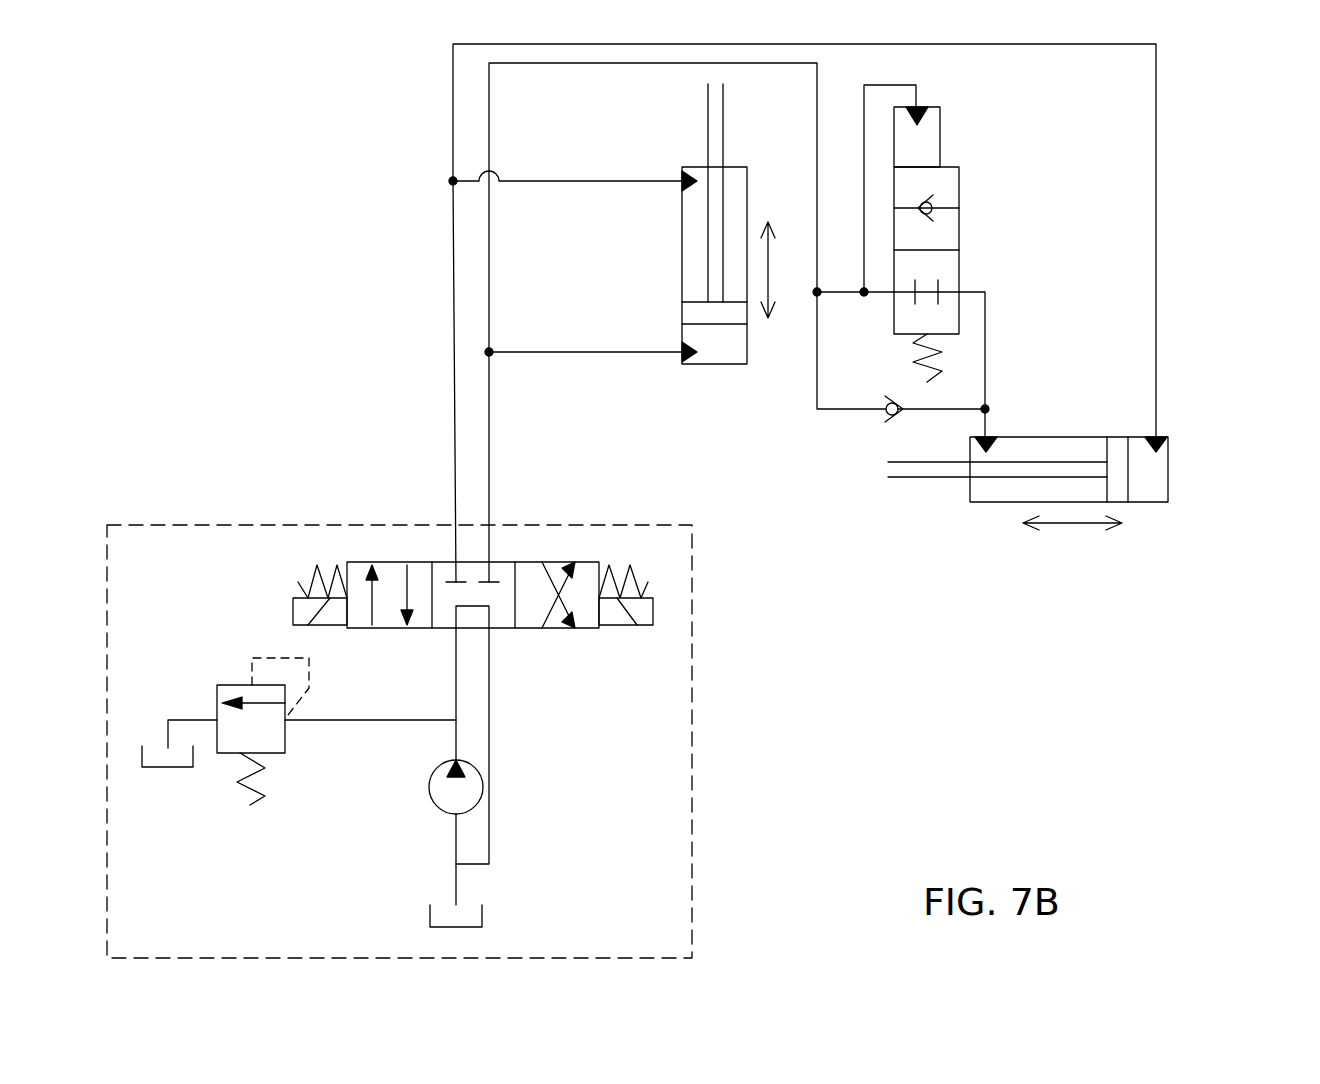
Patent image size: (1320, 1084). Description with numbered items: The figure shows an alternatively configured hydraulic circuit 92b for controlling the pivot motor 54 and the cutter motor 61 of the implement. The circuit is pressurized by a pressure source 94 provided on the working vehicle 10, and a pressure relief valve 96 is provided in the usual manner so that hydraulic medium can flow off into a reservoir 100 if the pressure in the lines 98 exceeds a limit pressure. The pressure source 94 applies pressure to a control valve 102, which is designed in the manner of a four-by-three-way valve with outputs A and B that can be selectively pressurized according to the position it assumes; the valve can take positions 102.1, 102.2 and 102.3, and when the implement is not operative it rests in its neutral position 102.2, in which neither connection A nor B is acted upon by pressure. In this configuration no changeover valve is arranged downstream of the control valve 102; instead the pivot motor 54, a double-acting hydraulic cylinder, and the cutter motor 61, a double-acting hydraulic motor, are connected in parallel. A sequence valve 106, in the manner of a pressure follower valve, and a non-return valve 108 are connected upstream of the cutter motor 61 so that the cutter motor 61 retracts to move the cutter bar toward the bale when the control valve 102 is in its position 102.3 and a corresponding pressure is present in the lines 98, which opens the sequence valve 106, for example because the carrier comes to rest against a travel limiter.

The working vehicle 10 is at (692, 600).
The pivot motor 54 is at (631, 250).
The cutter motor 61 is at (1187, 430).
The hydraulic circuit 92b is at (921, 663).
The pressure source 94 is at (430, 790).
The pressure relief valve 96 is at (226, 796).
The lines 98 is at (489, 446).
The reservoir 100 is at (162, 767).
The control valve 102 is at (473, 654).
The position 102.1 is at (362, 628).
The neutral position 102.2 is at (473, 562).
The position 102.3 is at (587, 628).
The sequence valve 106 is at (1000, 165).
The non-return valve 108 is at (882, 447).